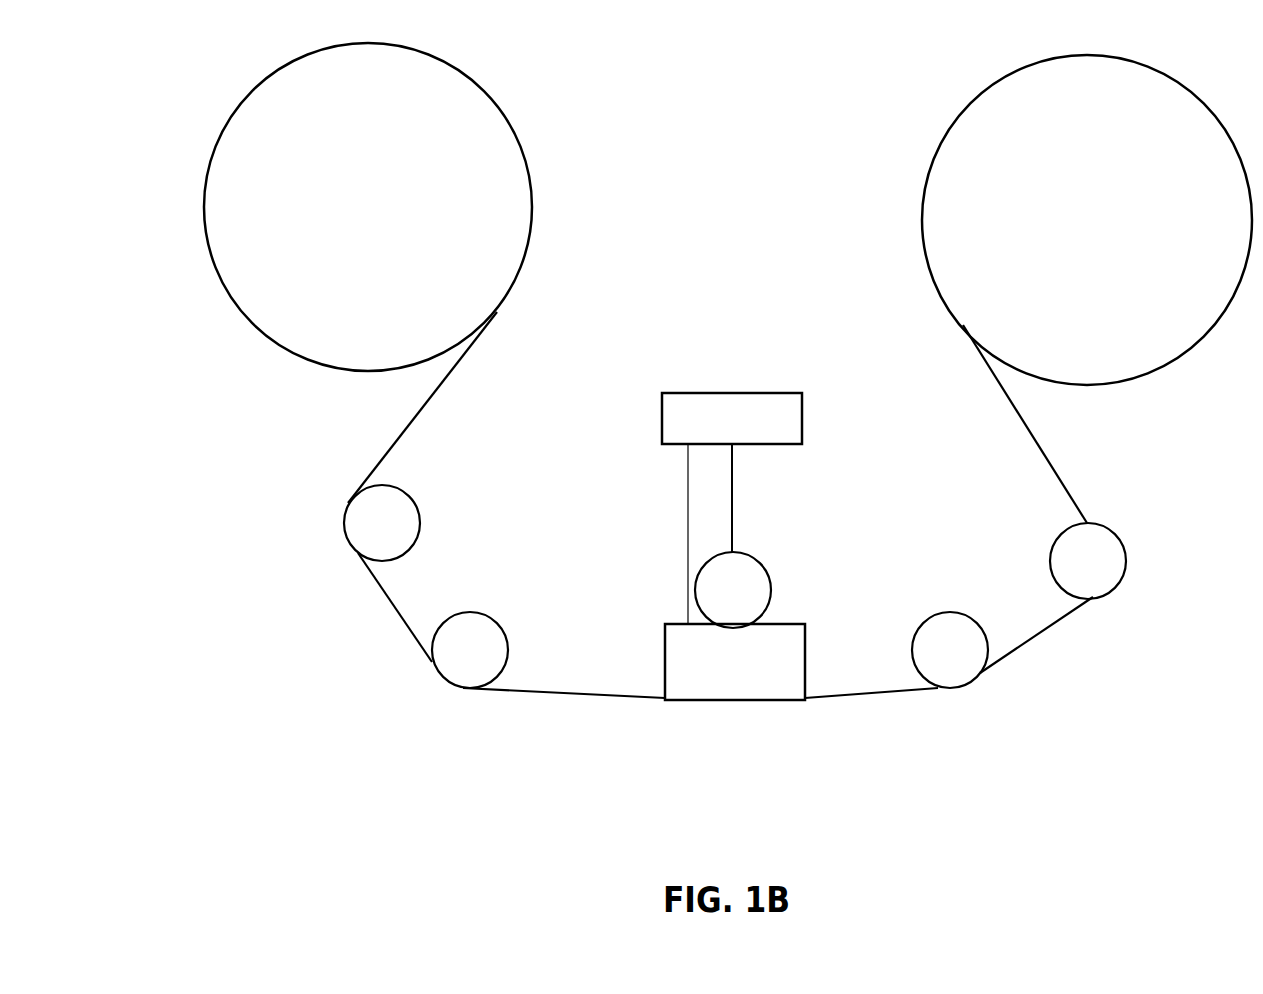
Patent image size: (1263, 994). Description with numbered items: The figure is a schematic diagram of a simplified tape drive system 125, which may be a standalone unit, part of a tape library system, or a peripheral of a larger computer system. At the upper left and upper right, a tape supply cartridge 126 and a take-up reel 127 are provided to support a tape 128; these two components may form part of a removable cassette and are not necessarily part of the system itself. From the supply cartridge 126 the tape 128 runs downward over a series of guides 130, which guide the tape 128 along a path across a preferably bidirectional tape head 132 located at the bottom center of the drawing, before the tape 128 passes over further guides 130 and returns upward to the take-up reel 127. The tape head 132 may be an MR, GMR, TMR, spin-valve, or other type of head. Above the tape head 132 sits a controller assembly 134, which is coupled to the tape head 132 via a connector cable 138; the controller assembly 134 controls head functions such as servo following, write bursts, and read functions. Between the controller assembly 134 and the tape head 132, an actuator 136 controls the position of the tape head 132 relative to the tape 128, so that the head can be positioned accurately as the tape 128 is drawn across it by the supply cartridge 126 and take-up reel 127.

The tape drive system 125 is at (331, 446).
The tape supply cartridge 126 is at (531, 177).
The take-up reel 127 is at (1192, 350).
The tape 128 is at (575, 695).
The guides 130 is at (470, 612).
The tape head 132 is at (806, 663).
The controller assembly 134 is at (731, 393).
The actuator 136 is at (758, 560).
The connector cable 138 is at (688, 585).